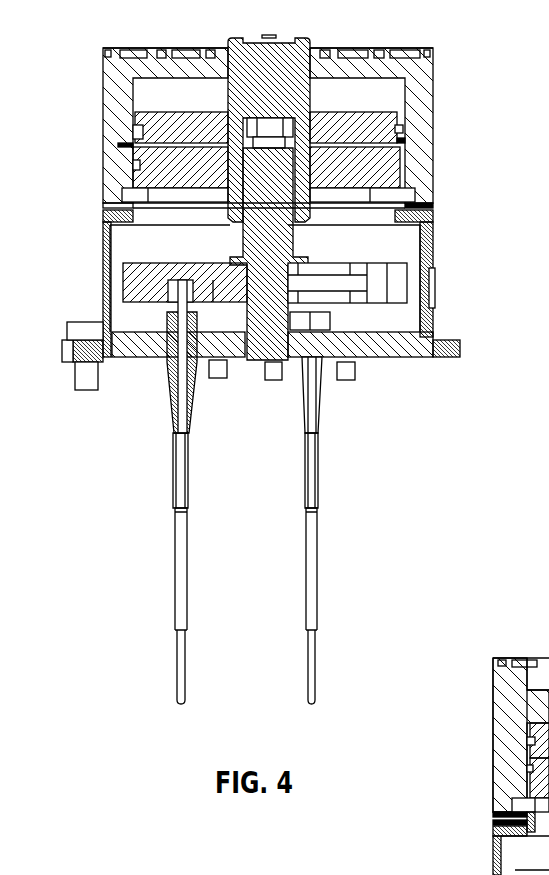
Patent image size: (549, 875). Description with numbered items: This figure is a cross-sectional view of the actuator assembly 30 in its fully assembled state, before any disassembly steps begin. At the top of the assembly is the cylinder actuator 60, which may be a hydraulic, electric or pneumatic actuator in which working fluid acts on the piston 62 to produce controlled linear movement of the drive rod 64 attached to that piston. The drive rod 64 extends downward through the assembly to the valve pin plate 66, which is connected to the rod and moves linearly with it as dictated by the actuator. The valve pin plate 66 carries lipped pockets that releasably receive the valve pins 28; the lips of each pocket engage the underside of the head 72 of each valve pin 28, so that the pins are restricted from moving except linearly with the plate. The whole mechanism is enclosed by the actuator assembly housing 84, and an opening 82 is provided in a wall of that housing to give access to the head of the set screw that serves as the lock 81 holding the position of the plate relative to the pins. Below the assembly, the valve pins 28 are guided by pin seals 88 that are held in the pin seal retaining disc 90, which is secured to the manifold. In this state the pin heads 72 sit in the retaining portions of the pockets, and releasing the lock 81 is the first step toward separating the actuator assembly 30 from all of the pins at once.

The actuator assembly 30 is at (452, 33).
The cylinder actuator 60 is at (103, 102).
The piston 62 is at (405, 122).
The drive rod 64 is at (297, 232).
The valve pin plate 66 is at (123, 275).
The head 72 is at (167, 283).
The actuator assembly housing 84 is at (435, 221).
The opening 82 is at (436, 287).
The pin seal 88 is at (193, 368).
The lock 81 is at (345, 278).
The pin seal retaining disc 90 is at (400, 352).
The valve pin 28 is at (177, 547).